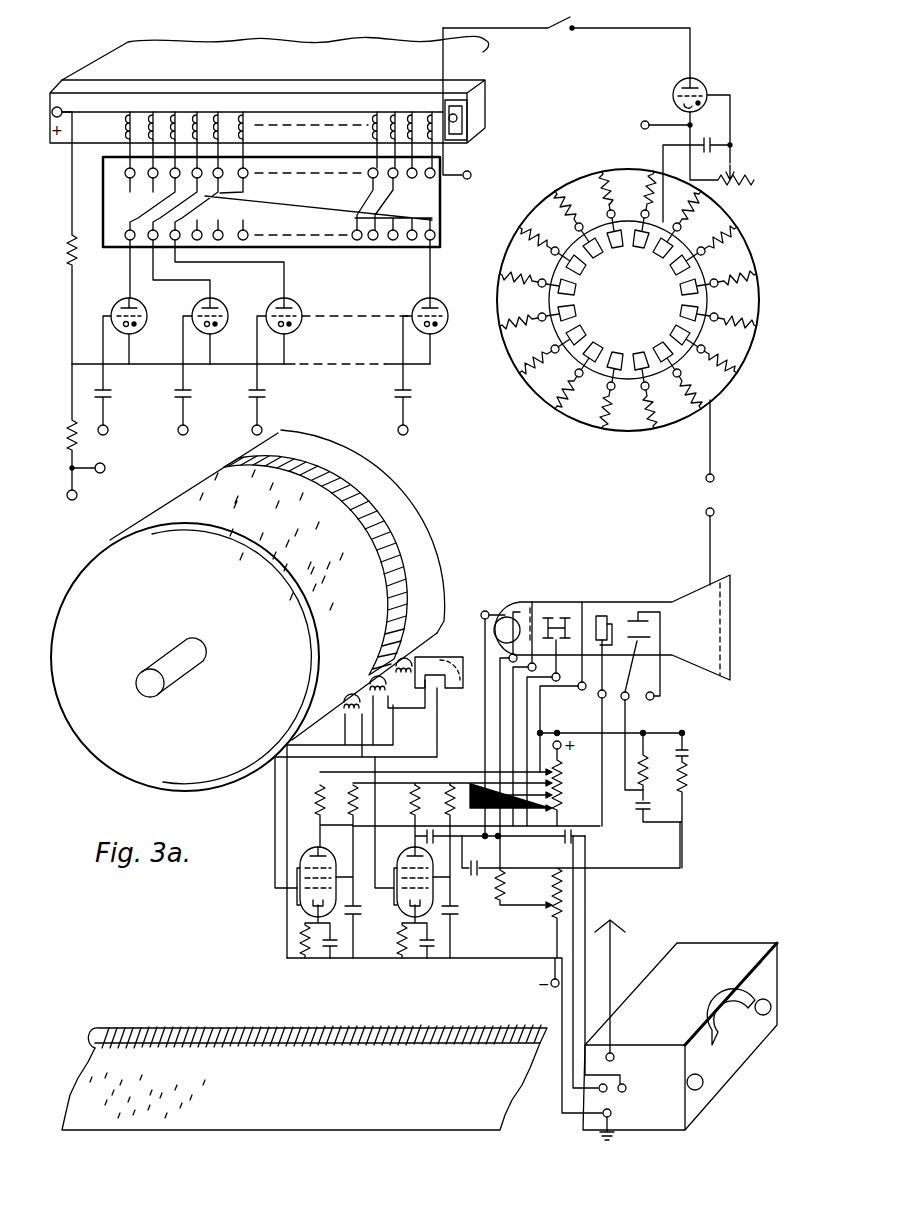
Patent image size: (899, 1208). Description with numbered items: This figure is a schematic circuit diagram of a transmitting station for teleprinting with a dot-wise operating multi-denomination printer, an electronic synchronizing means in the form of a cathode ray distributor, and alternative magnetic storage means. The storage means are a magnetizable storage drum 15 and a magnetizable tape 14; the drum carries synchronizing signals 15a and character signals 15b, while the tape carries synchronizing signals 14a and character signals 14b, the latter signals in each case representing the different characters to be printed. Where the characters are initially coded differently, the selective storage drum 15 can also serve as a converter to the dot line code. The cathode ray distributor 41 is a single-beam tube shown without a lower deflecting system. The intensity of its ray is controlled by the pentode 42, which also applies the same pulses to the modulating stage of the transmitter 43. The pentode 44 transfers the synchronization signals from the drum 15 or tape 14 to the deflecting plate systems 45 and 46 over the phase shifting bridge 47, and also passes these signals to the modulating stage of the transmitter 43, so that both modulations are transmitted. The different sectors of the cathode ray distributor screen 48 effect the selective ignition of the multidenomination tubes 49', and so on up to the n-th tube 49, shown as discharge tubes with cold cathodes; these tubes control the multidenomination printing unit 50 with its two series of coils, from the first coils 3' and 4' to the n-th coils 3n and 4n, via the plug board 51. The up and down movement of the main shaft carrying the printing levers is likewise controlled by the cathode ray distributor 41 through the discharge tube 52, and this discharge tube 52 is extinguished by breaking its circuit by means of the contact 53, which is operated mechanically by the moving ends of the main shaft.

The coil 3' is at (141, 160).
The coil 4' is at (141, 163).
The coil 3n is at (437, 143).
The coil 4n is at (435, 138).
The multidenomination printing unit 50 is at (473, 85).
The plug board 51 is at (442, 199).
The discharge tube 52 is at (703, 80).
The contact 53 is at (575, 23).
The cathode ray distributor screen 48 is at (628, 195).
The multidenomination tube 49' is at (121, 366).
The multidenomination tube 49 is at (352, 366).
The magnetic storage drum 15 is at (232, 462).
The synchronizing signals 15a is at (342, 498).
The character signals 15b is at (205, 498).
The cathode ray distributor 41 is at (620, 613).
The deflecting plate system 45 is at (600, 620).
The deflecting plate system 46 is at (640, 635).
The phase shifting bridge 47 is at (650, 806).
The pentode 44 is at (314, 855).
The pentode 42 is at (410, 855).
The transmitter 43 is at (705, 975).
The magnetic tape 14 is at (170, 1080).
The synchronizing signals 14a is at (248, 1035).
The character signals 14b is at (154, 1107).